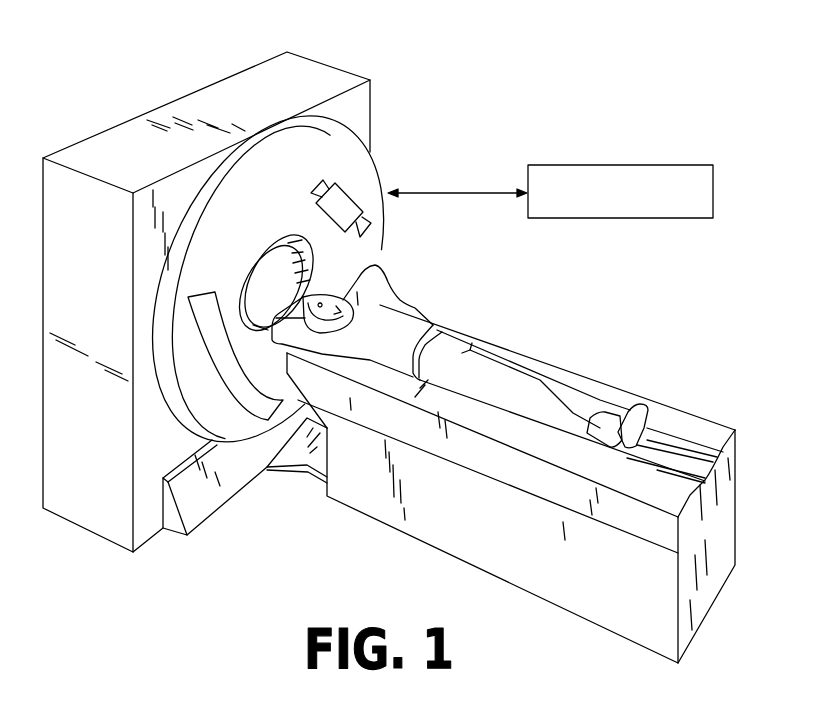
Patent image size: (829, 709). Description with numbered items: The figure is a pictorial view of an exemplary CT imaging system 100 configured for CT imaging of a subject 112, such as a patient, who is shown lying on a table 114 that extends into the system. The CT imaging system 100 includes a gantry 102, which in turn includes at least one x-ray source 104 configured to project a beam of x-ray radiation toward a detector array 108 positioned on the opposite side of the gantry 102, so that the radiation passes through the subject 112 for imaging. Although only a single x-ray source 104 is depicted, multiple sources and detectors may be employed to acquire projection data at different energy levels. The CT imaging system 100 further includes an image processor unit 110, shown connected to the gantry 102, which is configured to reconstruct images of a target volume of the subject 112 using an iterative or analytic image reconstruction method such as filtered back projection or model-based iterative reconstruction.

The CT imaging system 100 is at (655, 38).
The gantry 102 is at (315, 74).
The x-ray source 104 is at (357, 209).
The detector array 108 is at (257, 400).
The image processor unit 110 is at (673, 164).
The subject 112 is at (408, 310).
The table 114 is at (690, 423).